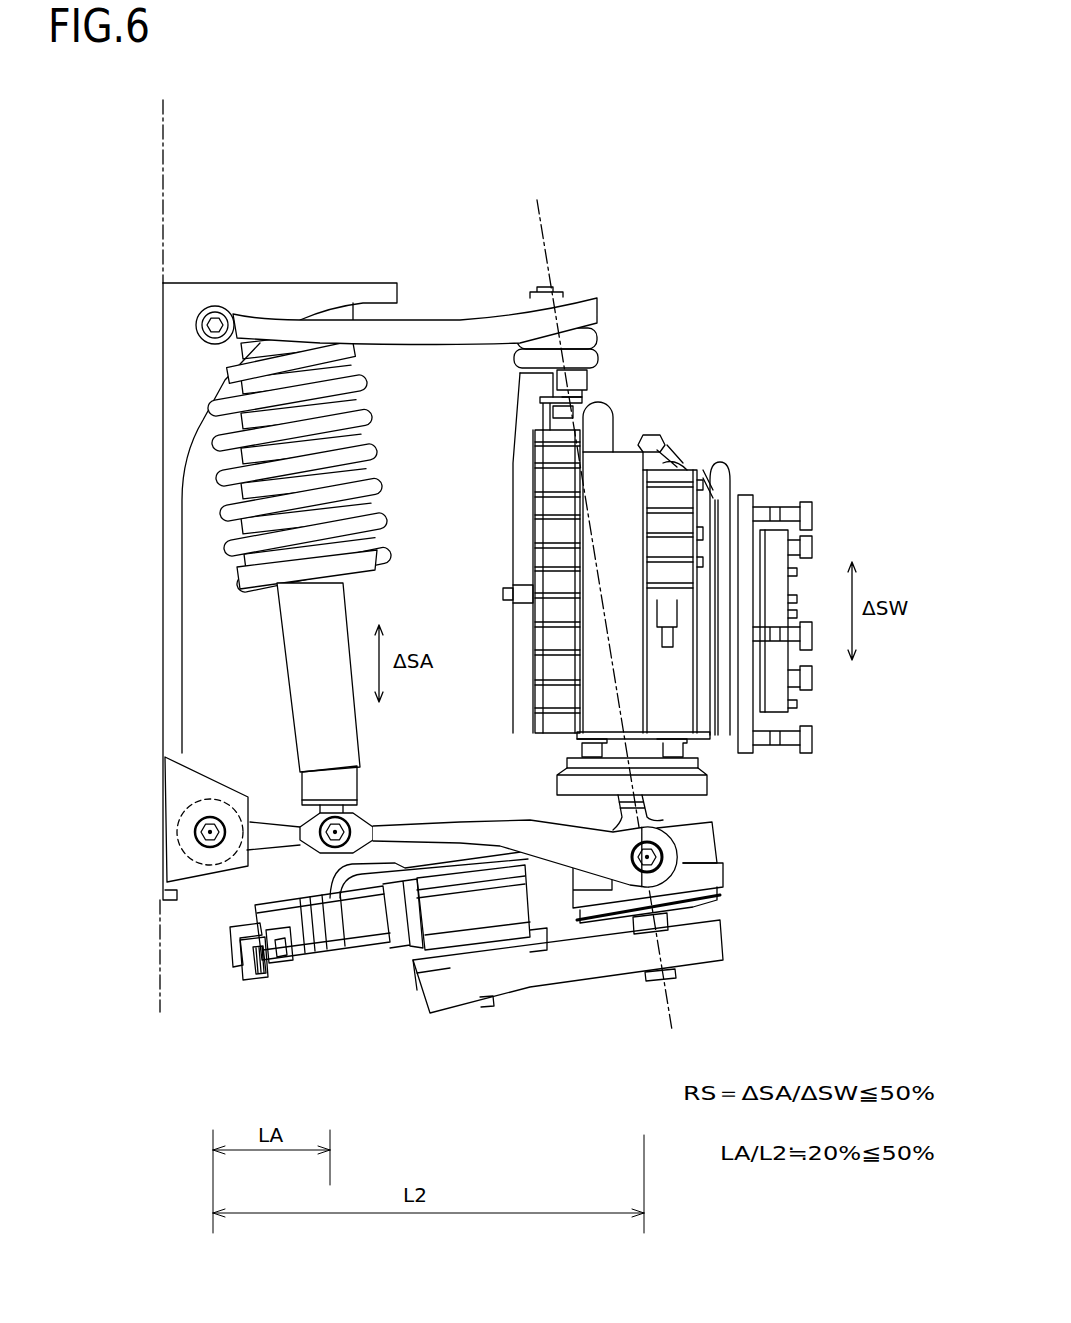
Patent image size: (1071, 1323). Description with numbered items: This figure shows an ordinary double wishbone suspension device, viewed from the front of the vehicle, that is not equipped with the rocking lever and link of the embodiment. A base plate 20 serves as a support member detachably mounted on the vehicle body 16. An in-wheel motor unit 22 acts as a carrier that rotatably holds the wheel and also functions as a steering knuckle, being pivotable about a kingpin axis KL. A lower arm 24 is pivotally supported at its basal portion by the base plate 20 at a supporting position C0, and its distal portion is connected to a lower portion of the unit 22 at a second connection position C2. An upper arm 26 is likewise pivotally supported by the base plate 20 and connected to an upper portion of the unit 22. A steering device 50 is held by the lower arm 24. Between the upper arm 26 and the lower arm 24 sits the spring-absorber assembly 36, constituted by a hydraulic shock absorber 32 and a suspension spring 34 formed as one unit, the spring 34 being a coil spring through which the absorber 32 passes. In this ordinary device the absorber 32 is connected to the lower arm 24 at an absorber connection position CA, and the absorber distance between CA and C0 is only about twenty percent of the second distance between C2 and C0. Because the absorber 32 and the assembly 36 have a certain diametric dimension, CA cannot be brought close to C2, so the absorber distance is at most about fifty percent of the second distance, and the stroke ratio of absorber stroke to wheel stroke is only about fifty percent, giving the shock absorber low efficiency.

The vehicle body 16 is at (163, 142).
The base plate 20 is at (176, 394).
The in-wheel motor unit 22 is at (704, 436).
The lower arm 24 is at (440, 827).
The upper arm 26 is at (430, 332).
The hydraulic shock absorber 32 is at (290, 622).
The suspension spring 34 is at (236, 516).
The spring-absorber assembly 36 is at (209, 572).
The steering device 50 is at (386, 989).
The kingpin axis KL is at (553, 232).
The absorber connection position CA is at (347, 824).
The supporting position C0 is at (200, 832).
The second connection position C2 is at (660, 830).